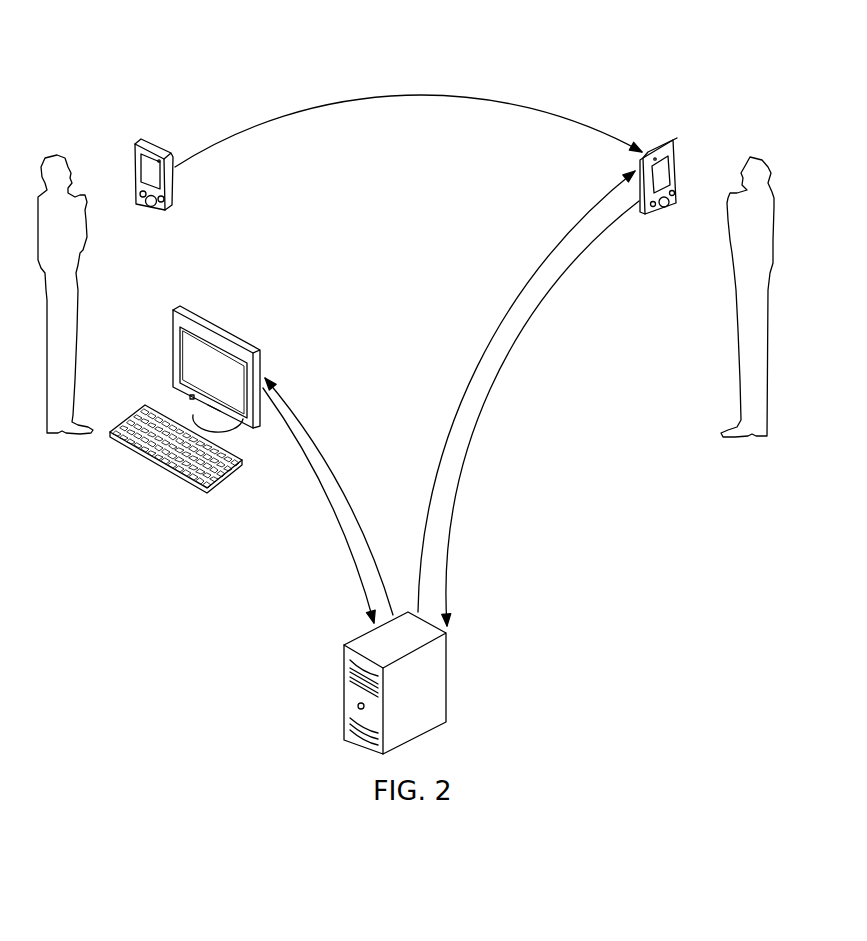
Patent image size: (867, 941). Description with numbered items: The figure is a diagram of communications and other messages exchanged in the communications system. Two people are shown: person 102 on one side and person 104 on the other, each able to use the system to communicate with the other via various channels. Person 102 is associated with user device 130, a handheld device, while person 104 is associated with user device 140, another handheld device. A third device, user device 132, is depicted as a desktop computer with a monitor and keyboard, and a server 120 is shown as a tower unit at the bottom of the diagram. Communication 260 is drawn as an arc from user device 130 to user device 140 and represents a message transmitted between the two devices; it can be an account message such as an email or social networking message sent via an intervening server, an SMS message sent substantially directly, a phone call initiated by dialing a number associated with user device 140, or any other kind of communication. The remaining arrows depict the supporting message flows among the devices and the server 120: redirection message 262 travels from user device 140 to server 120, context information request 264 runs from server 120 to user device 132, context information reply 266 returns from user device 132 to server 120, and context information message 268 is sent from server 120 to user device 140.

The person 102 is at (57, 155).
The person 104 is at (750, 157).
The server 120 is at (448, 681).
The user device 130 is at (160, 143).
The user device 132 is at (208, 318).
The user device 140 is at (645, 140).
The communication 260 is at (398, 95).
The redirection message 262 is at (526, 343).
The context information request 264 is at (332, 474).
The context information reply 266 is at (338, 521).
The context information message 268 is at (481, 367).